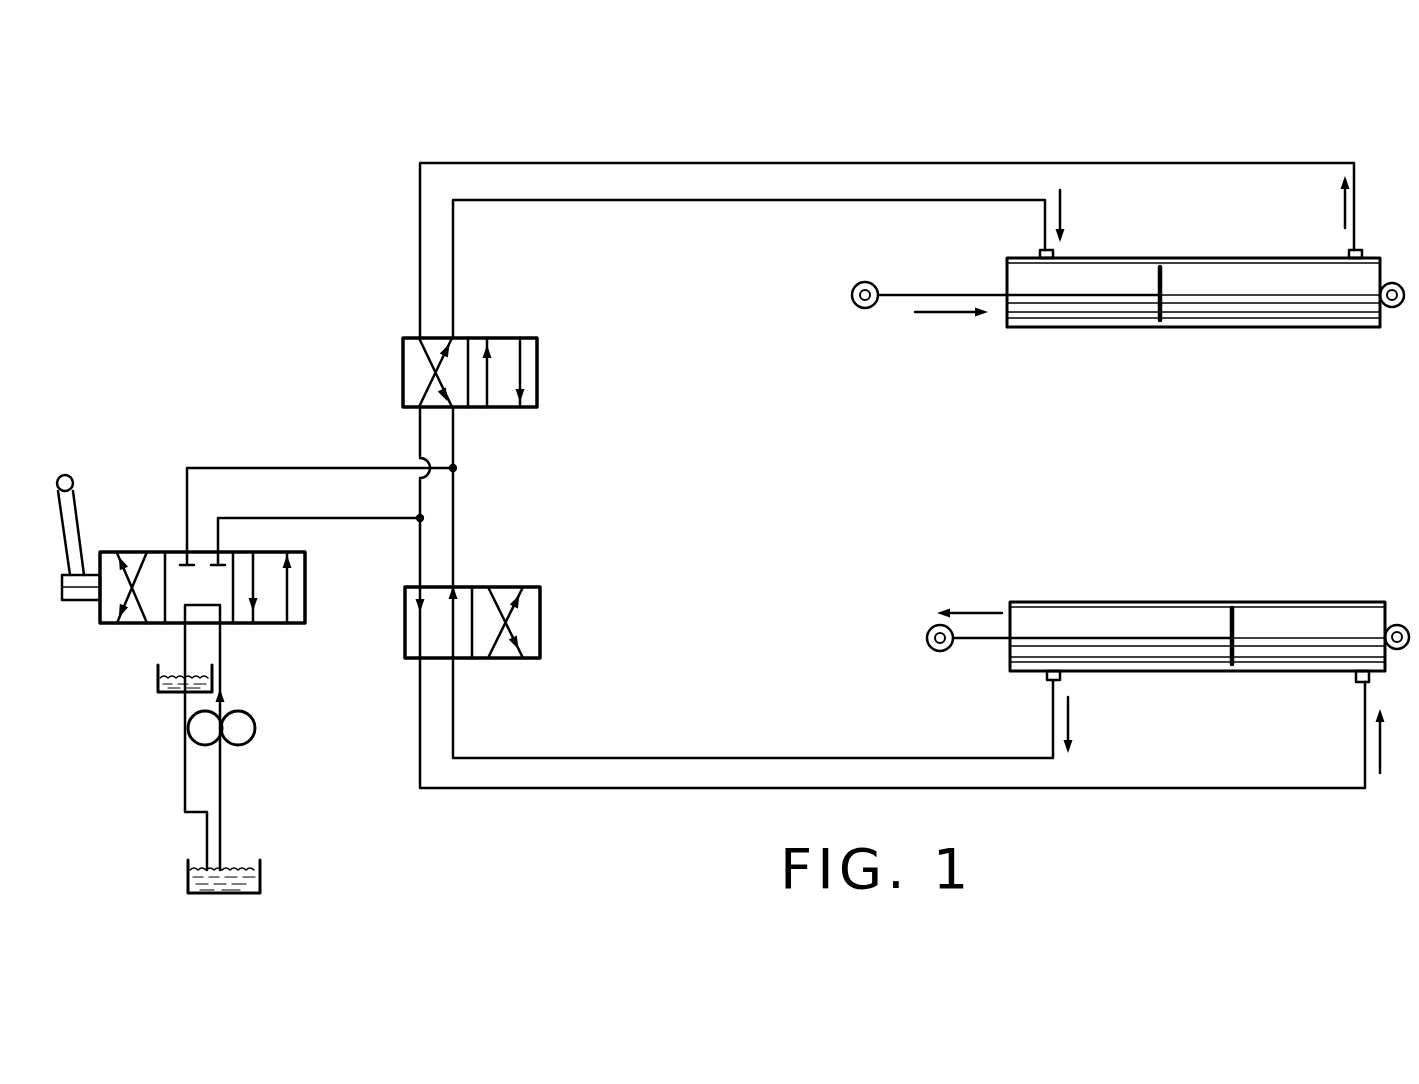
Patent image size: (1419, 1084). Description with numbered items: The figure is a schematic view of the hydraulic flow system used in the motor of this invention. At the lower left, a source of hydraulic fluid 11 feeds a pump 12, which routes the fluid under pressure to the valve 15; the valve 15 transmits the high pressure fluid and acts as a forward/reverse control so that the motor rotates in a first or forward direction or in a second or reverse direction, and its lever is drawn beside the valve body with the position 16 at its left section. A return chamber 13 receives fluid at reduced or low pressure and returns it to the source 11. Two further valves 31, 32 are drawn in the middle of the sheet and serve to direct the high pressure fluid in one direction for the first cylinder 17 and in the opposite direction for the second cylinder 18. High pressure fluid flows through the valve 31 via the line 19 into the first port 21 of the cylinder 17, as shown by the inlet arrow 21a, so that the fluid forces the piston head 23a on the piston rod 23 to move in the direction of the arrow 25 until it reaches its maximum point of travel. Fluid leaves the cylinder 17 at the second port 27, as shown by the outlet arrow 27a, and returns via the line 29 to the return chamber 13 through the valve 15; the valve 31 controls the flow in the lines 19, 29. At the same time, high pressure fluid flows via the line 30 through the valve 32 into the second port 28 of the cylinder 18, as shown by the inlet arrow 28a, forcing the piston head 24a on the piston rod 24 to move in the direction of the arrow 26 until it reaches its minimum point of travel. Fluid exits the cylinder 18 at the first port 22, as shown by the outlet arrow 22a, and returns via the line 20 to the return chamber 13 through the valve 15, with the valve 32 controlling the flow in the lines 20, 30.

The source of hydraulic fluid 11 is at (236, 868).
The pump 12 is at (243, 723).
The return chamber 13 is at (165, 692).
The valve 15 is at (275, 625).
The valve position 16 is at (130, 625).
The first cylinder 17 is at (1290, 612).
The second cylinder 18 is at (1264, 312).
The line 19 is at (420, 730).
The line 20 is at (420, 270).
The first port 21 is at (1352, 685).
The inlet arrow 21a is at (1385, 748).
The first port 22 is at (1350, 251).
The outlet arrow 22a is at (1343, 218).
The piston rod 23 is at (990, 646).
The piston head 23a is at (1228, 616).
The piston rod 24 is at (940, 293).
The piston head 24a is at (1164, 282).
The arrow 25 is at (985, 612).
The arrow 26 is at (935, 314).
The second port 27 is at (1046, 681).
The outlet arrow 27a is at (1070, 704).
The second port 28 is at (1040, 252).
The inlet arrow 28a is at (1062, 205).
The line 29 is at (455, 678).
The line 30 is at (453, 270).
The valve 31 is at (405, 646).
The valve 32 is at (403, 355).